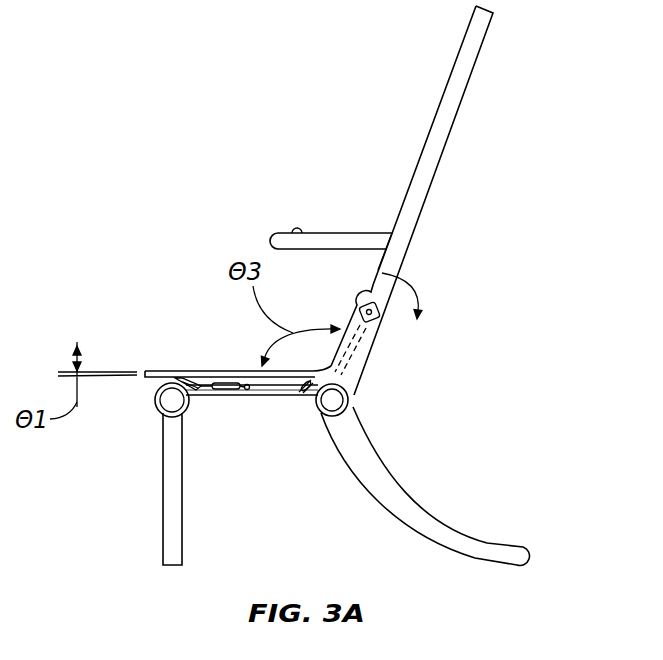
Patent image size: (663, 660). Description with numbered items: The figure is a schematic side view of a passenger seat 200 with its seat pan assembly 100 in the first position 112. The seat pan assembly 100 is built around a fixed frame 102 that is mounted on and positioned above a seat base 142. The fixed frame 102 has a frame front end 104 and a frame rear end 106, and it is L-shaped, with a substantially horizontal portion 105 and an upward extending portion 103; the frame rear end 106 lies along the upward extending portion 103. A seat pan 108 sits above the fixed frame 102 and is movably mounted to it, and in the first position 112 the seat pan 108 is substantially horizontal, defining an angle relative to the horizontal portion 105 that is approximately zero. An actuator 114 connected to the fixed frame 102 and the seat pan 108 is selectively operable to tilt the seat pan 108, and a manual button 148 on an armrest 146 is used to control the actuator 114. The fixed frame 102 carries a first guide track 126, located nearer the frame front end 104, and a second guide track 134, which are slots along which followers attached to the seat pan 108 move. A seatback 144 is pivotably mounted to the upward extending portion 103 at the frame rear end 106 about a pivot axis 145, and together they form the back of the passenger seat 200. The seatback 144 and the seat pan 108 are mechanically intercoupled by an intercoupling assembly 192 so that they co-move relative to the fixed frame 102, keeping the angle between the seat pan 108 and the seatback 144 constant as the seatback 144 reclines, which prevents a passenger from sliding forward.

The passenger seat 200 is at (140, 52).
The seat pan assembly 100 is at (199, 368).
The fixed frame 102 is at (268, 396).
The upward extending portion 103 is at (370, 340).
The frame front end 104 is at (205, 393).
The substantially horizontal portion 105 is at (260, 396).
The frame rear end 106 is at (362, 360).
The seat pan 108 is at (164, 371).
The first position 112 is at (218, 376).
The actuator 114 is at (218, 393).
The first guide track 126 is at (182, 390).
The second guide track 134 is at (302, 397).
The seat base 142 is at (373, 482).
The seatback 144 is at (445, 110).
The pivot axis 145 is at (362, 303).
The armrest 146 is at (282, 240).
The manual button 148 is at (297, 230).
The intercoupling assembly 192 is at (343, 367).